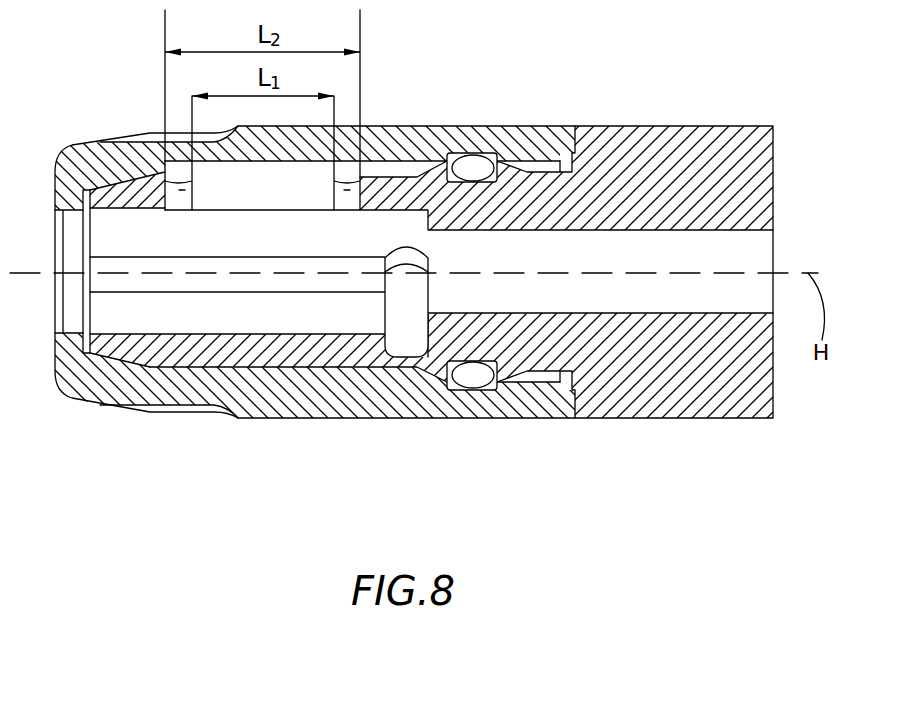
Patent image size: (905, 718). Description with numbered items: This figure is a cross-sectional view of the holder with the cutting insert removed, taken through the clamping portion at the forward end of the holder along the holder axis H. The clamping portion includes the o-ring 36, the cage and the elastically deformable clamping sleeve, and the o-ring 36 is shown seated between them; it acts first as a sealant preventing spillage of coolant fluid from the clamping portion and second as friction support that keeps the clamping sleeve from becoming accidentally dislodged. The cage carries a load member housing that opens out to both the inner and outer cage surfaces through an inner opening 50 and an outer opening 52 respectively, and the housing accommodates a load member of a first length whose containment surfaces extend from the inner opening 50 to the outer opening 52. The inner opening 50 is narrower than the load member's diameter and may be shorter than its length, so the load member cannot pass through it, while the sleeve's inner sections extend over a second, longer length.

The o-ring 36 is at (472, 166).
The inner opening 50 is at (177, 210).
The outer opening 52 is at (370, 176).